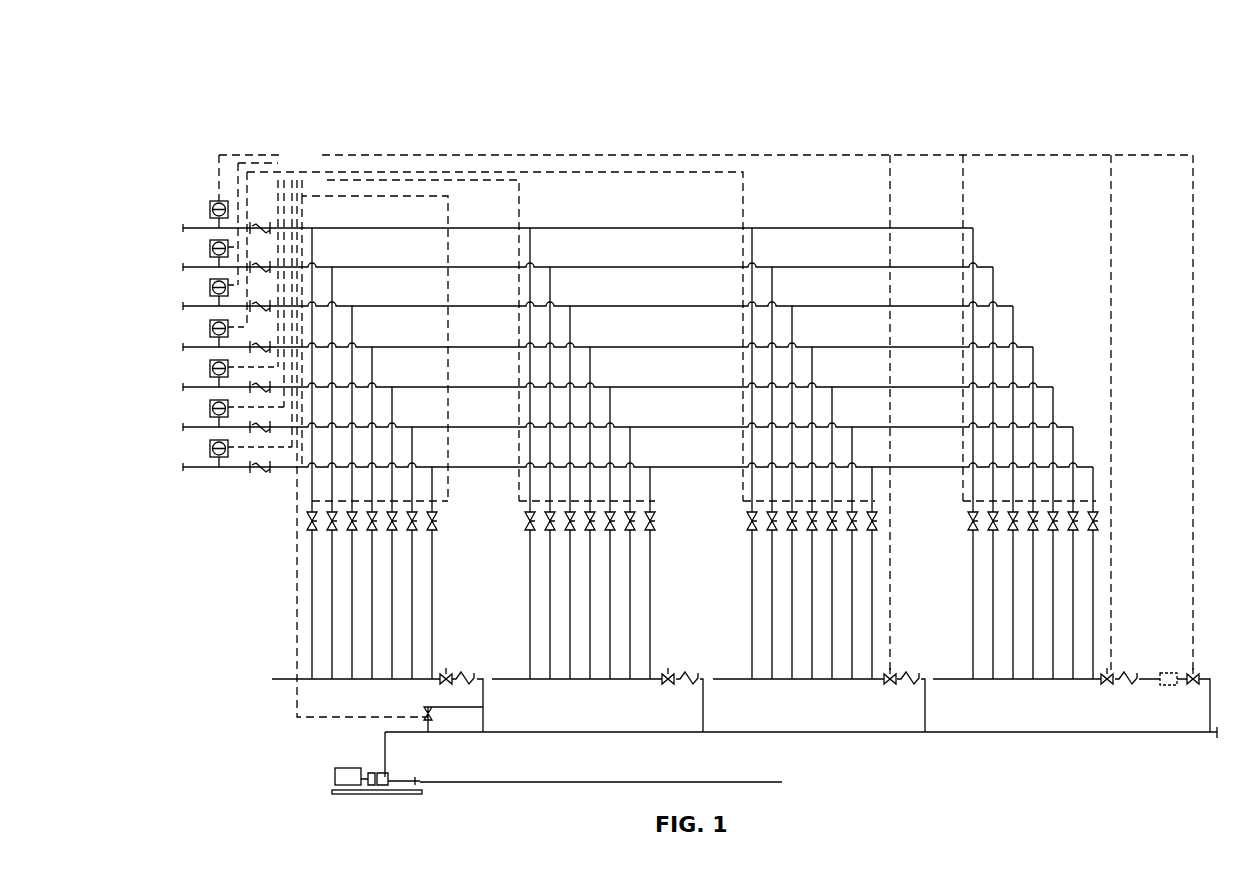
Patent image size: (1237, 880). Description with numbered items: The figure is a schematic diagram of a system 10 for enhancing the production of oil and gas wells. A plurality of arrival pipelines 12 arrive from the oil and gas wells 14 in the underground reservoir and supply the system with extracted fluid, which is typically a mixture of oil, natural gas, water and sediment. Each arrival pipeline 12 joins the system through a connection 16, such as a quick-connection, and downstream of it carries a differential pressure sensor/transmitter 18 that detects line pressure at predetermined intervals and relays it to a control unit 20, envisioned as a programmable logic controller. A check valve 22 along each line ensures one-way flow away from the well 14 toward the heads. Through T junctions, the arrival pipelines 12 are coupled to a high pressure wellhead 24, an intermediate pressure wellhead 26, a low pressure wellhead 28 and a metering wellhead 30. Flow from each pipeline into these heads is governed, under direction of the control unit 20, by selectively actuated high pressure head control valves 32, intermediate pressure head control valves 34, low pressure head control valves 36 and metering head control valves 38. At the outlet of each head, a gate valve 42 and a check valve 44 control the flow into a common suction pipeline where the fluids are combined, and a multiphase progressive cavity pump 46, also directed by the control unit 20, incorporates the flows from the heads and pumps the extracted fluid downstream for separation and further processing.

The system 10 is at (945, 110).
The arrival pipelines 12 is at (152, 459).
The oil/gas wells 14 is at (113, 449).
The connection 16 is at (182, 474).
The differential pressure sensor/transmitter 18 is at (217, 459).
The control unit 20 is at (293, 130).
The check valve 22 is at (268, 475).
The high pressure wellhead 24 is at (281, 679).
The intermediate pressure wellhead 26 is at (494, 681).
The low pressure wellhead 28 is at (716, 681).
The metering wellhead 30 is at (936, 681).
The high pressure head control valves 32 is at (437, 520).
The intermediate pressure head control valves 34 is at (655, 520).
The low pressure head control valves 36 is at (877, 520).
The metering head control valves 38 is at (1098, 520).
The gate valve 42 is at (440, 683).
The check valve 44 is at (468, 673).
The progressive cavity pump 46 is at (347, 766).